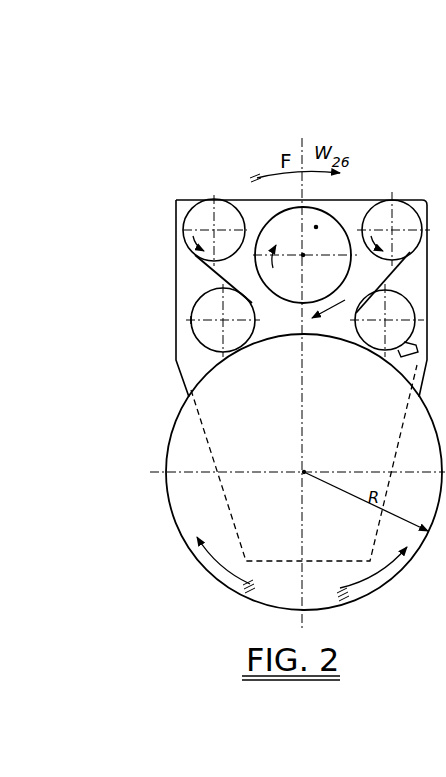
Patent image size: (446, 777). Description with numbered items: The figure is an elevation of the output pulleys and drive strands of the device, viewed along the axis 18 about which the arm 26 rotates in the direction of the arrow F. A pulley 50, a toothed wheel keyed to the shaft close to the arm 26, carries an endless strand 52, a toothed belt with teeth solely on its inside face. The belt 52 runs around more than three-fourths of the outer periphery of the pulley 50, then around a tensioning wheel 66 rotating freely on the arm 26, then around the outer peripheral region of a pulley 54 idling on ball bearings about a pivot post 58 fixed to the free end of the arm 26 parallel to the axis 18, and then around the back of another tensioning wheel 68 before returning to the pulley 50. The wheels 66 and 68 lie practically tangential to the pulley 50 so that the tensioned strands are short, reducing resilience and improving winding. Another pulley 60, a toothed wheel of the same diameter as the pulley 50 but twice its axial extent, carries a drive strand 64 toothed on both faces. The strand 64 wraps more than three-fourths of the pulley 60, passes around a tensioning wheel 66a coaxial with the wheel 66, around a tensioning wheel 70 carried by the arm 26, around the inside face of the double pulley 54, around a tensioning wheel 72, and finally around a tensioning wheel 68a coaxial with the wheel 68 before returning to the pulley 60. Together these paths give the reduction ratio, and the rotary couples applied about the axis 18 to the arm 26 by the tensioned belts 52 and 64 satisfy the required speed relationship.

The axis 18 is at (304, 472).
The arm 26 is at (178, 343).
The pulley 50 is at (167, 482).
The endless strand 52 is at (268, 215).
The pulley 54 is at (316, 227).
The pivot post 58 is at (302, 255).
The pulley 60 is at (171, 508).
The drive strand 64 is at (396, 256).
The tensioning wheel 66 is at (192, 307).
The tensioning wheel 66a is at (78, 316).
The tensioning wheel 68 is at (397, 350).
The tensioning wheel 68a is at (380, 458).
The tensioning wheel 70 is at (200, 215).
The tensioning wheel 72 is at (380, 218).